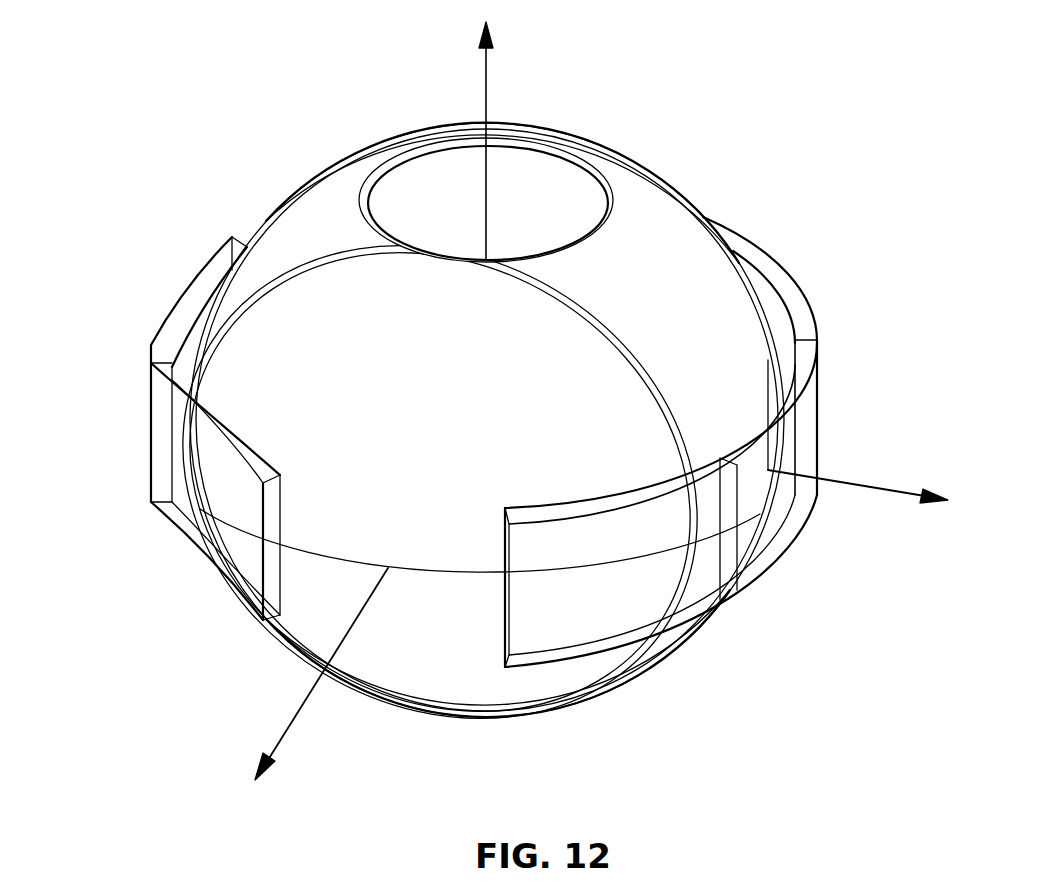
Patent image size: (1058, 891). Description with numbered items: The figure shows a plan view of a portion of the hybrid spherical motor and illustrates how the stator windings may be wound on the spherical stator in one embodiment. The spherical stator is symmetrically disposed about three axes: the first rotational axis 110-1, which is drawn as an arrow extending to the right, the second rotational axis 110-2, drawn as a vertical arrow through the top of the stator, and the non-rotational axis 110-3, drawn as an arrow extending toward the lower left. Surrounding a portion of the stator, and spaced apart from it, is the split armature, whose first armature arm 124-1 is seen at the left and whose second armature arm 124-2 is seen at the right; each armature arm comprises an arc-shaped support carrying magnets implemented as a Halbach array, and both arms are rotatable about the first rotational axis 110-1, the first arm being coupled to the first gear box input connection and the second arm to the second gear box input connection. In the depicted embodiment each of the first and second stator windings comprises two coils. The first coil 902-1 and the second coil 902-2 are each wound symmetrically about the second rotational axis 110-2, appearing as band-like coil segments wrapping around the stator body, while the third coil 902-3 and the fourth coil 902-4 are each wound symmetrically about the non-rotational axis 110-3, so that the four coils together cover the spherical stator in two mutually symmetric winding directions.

The first rotational axis 110-1 is at (874, 483).
The second rotational axis 110-2 is at (486, 82).
The non-rotational axis 110-3 is at (290, 734).
The first armature arm 124-1 is at (170, 284).
The second armature arm 124-2 is at (794, 291).
The first coil 902-1 is at (326, 203).
The second coil 902-2 is at (704, 590).
The third coil 902-3 is at (272, 421).
The fourth coil 902-4 is at (640, 172).